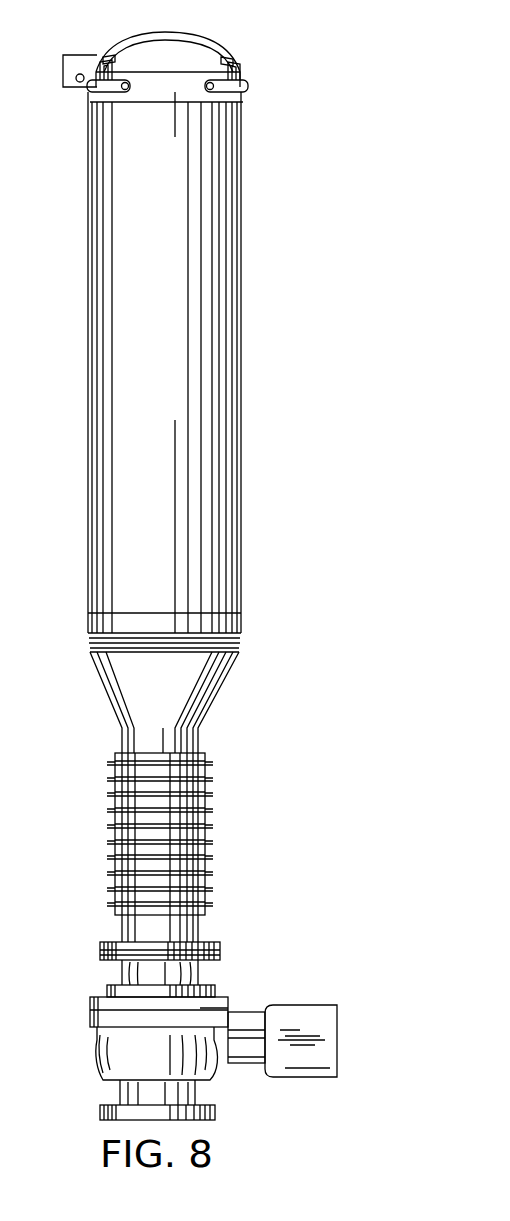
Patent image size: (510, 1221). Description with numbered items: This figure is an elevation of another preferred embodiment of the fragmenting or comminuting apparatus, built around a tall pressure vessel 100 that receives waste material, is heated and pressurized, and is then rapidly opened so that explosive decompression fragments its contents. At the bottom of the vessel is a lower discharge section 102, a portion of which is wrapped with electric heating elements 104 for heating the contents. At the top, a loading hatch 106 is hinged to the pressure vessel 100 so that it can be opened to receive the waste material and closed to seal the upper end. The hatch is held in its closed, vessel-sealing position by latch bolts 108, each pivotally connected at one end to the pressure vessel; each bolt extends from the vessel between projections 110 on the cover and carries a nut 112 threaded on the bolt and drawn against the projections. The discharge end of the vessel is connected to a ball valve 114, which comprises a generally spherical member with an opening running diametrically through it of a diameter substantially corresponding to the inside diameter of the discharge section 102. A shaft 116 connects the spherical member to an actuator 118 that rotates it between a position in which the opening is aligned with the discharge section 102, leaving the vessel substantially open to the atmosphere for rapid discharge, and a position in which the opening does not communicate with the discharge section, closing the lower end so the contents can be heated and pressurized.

The pressure vessel 100 is at (233, 366).
The lower discharge section 102 is at (190, 926).
The electric heating elements 104 is at (180, 762).
The loading hatch 106 is at (134, 45).
The latch bolts 108 is at (245, 82).
The projections 110 is at (240, 70).
The nut 112 is at (232, 48).
The ball valve 114 is at (112, 1018).
The shaft 116 is at (245, 1030).
The actuator 118 is at (328, 1040).